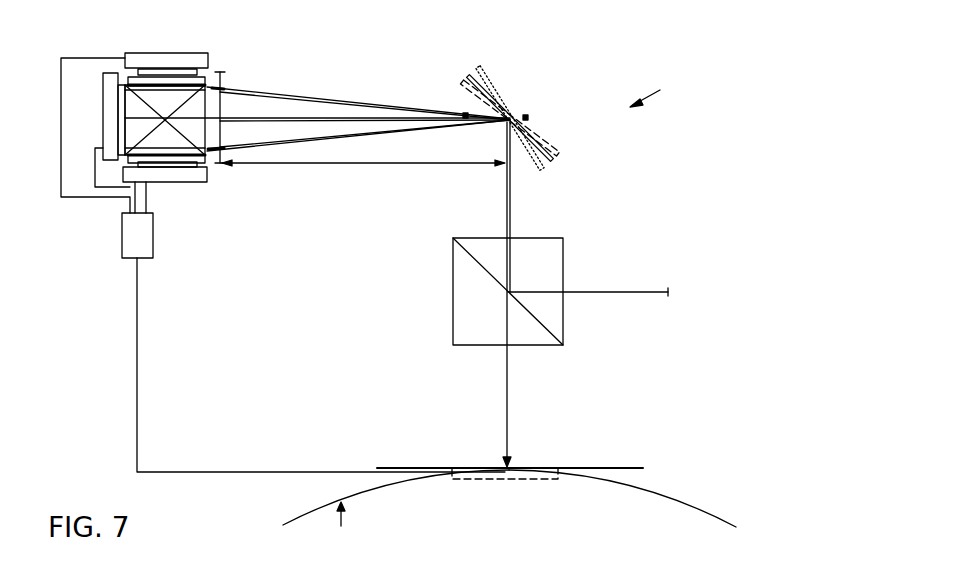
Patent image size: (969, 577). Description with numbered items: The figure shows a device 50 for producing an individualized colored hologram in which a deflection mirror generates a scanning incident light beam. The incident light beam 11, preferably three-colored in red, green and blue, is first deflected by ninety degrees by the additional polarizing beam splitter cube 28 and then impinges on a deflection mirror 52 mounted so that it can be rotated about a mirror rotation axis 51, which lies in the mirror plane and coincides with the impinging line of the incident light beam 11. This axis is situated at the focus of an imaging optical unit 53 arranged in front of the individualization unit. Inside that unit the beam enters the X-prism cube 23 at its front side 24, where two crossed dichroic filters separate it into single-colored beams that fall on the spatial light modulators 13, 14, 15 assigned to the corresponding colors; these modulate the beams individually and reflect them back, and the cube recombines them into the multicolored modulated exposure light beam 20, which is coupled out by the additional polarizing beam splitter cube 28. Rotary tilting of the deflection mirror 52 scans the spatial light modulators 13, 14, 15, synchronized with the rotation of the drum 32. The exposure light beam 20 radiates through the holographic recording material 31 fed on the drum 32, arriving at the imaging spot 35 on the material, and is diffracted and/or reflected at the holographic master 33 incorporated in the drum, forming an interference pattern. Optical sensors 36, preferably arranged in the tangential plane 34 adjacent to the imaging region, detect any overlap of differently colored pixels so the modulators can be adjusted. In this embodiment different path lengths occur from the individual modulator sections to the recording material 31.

The spatial light modulator 14 is at (167, 58).
The spatial light modulator 15 is at (103, 100).
The spatial light modulator 13 is at (182, 183).
The X-prism cube 23 is at (287, 80).
The front side 24 is at (205, 140).
The imaging optical unit 53 is at (221, 135).
The mirror rotation axis 51 is at (512, 115).
The deflection mirror 52 is at (470, 76).
The device for producing an individualized colored hologram 50 is at (658, 87).
The exposure light beam 20 is at (506, 385).
The additional polarizing beam splitter cube 28 is at (453, 317).
The incident light beam 11 is at (627, 292).
The measuring spot 35 is at (509, 464).
The tangential plane 34 is at (605, 467).
The optical sensors 36 is at (540, 480).
The holographic recording material 31 is at (302, 510).
The drum 32 is at (668, 525).
The holographic master 33 is at (342, 529).